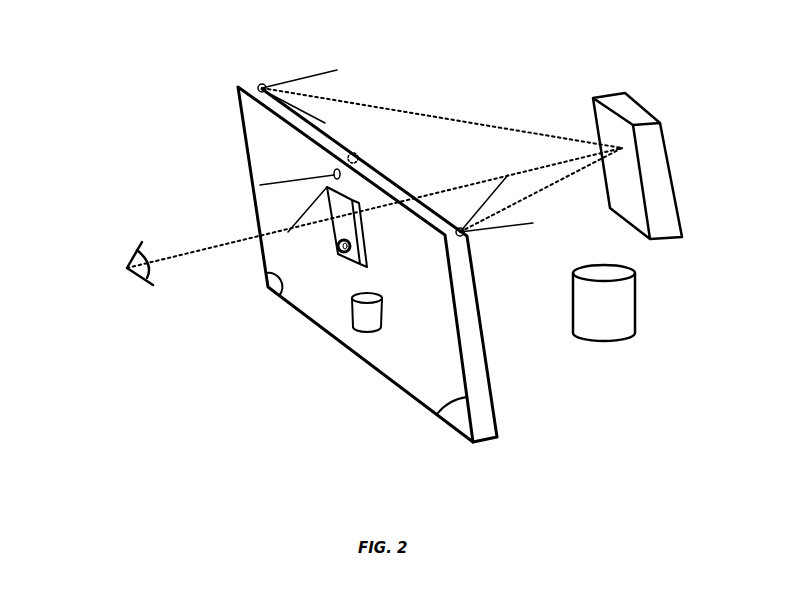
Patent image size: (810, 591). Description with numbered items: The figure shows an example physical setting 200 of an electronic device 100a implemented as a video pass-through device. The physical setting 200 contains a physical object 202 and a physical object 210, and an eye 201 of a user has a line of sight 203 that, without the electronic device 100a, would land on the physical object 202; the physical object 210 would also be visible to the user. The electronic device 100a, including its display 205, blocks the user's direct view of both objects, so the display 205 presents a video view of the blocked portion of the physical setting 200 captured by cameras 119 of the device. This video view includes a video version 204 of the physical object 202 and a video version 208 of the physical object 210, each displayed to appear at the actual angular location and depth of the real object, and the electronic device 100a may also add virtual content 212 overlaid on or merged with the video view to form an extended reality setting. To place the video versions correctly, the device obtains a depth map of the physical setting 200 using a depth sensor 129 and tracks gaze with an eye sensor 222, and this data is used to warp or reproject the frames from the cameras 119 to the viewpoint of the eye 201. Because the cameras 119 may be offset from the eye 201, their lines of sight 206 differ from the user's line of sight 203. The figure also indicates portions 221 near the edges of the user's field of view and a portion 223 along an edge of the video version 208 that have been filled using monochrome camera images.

The electronic device 100a is at (424, 271).
The cameras 119 is at (262, 83).
The depth sensor 129 is at (359, 158).
The physical setting 200 is at (669, 39).
The eye 201 is at (122, 260).
The physical object 202 is at (602, 118).
The line of sight 203 is at (194, 250).
The video version of physical object 204 is at (323, 232).
The display 205 is at (352, 350).
The lines of sight of cameras 206 is at (418, 112).
The video version of physical object 208 is at (345, 318).
The physical object 210 is at (603, 342).
The virtual content 212 is at (337, 240).
The portions of display frame 221 is at (265, 285).
The eye sensor 222 is at (334, 172).
The portion of display frame 223 is at (350, 313).